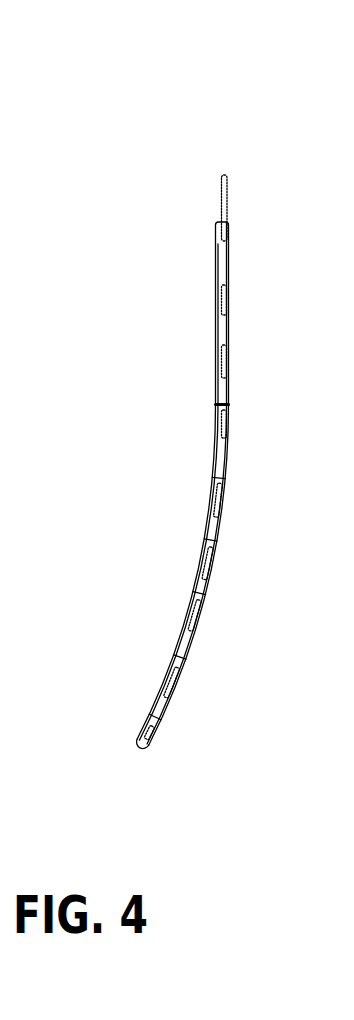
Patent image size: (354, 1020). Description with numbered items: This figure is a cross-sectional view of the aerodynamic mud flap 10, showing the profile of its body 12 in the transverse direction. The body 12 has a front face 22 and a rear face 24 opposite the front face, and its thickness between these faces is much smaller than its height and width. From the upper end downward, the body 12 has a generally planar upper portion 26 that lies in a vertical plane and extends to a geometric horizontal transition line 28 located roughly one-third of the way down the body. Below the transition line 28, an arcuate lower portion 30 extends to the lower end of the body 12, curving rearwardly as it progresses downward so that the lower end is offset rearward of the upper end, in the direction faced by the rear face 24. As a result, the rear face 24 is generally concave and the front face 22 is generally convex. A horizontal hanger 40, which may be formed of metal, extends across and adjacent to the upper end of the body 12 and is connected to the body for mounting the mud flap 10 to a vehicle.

The aerodynamic mud flap 10 is at (241, 140).
The body 12 is at (231, 265).
The front face 22 is at (208, 588).
The rear face 24 is at (213, 479).
The upper portion 26 is at (169, 210).
The transition line 28 is at (215, 404).
The lower portion 30 is at (148, 412).
The hanger 40 is at (229, 192).